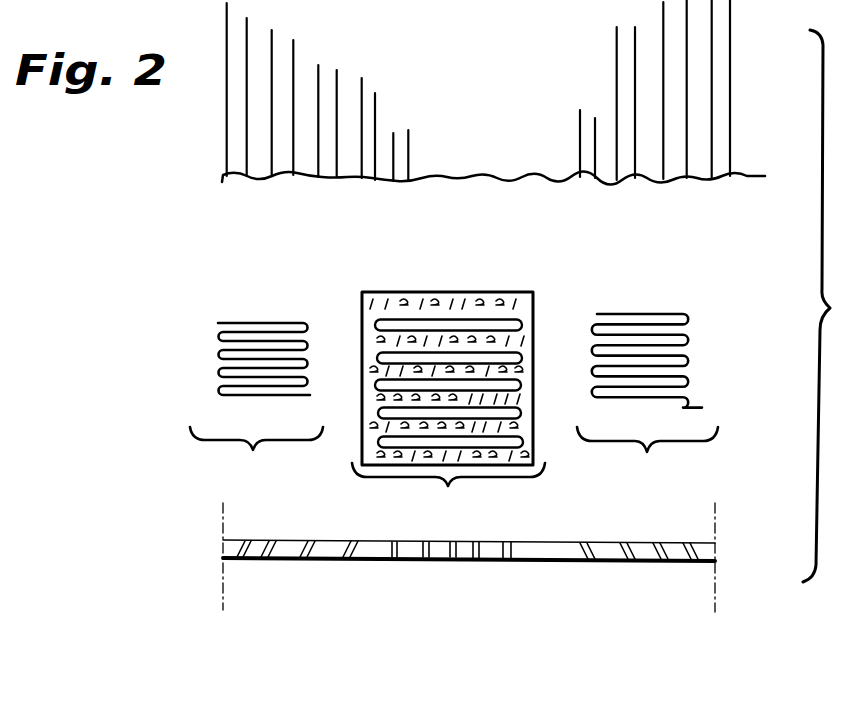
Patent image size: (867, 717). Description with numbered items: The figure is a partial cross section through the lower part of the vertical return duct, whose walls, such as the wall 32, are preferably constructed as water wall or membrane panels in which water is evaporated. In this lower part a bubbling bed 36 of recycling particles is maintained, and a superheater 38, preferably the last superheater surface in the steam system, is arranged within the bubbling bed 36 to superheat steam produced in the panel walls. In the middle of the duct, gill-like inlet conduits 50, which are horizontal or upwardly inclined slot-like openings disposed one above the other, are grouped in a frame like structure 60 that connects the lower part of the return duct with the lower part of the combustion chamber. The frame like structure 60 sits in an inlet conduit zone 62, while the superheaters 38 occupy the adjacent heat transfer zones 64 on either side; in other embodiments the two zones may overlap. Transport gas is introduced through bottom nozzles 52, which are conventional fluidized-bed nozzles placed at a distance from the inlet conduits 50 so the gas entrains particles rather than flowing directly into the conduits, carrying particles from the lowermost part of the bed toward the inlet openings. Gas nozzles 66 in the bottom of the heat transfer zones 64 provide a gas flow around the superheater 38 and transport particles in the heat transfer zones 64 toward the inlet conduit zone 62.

The wall 32 is at (502, 117).
The bubbling bed 36 is at (402, 229).
The superheater 38 is at (246, 323).
The inlet conduits 50 is at (480, 351).
The frame like structure 60 is at (463, 293).
The inlet conduit zone 62 is at (448, 496).
The heat transfer zones 64 is at (454, 462).
The bottom nozzles 52 is at (448, 562).
The gas nozzles 66 is at (268, 562).